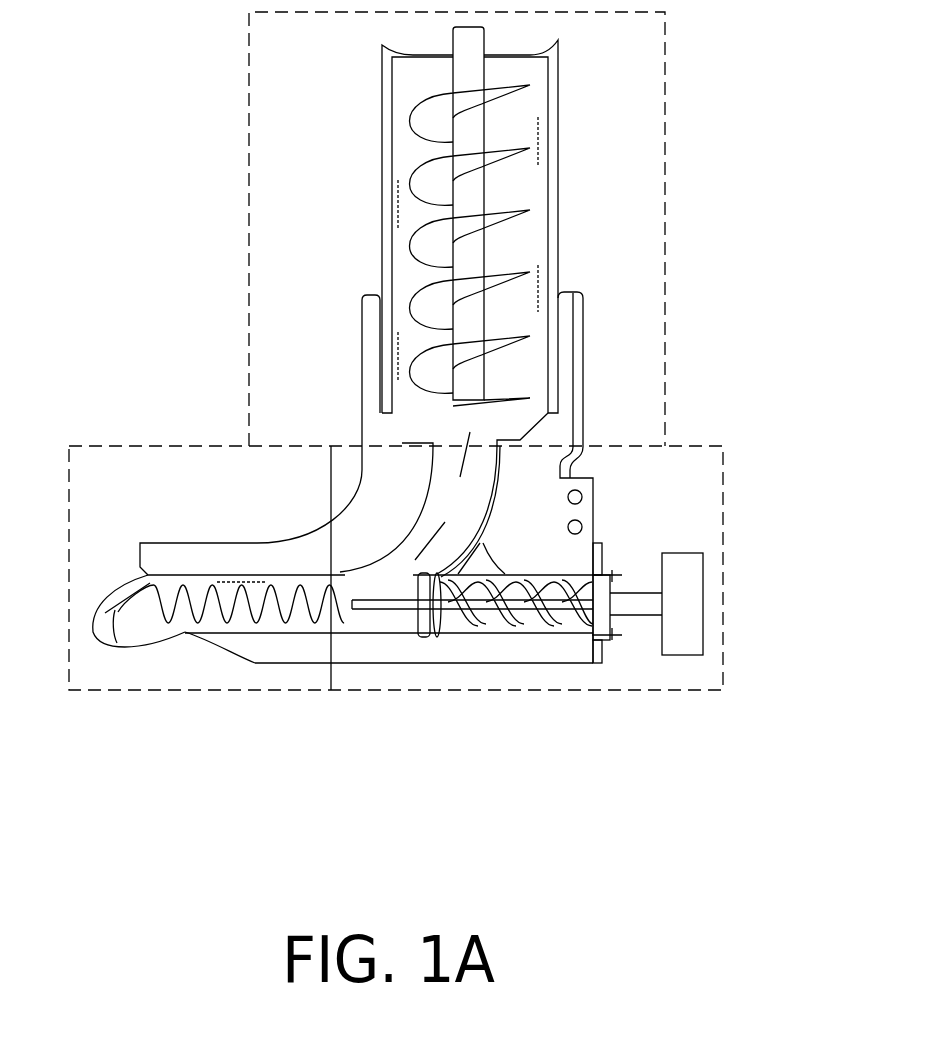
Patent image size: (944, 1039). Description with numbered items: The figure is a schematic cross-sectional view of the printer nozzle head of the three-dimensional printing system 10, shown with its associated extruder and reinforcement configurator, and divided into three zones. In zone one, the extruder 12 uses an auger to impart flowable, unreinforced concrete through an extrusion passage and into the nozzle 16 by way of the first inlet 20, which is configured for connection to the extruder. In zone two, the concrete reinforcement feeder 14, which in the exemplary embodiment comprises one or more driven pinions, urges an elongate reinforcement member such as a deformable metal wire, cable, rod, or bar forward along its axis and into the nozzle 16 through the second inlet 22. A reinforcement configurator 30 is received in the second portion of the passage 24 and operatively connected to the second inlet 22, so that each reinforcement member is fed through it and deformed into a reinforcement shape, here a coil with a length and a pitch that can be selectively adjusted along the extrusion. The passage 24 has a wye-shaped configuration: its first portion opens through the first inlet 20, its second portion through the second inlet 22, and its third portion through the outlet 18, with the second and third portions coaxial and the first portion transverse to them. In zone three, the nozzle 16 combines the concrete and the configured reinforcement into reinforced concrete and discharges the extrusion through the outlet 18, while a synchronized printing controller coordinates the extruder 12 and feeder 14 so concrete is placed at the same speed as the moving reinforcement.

The 3D printing system 10 is at (127, 180).
The extruder 12 is at (562, 135).
The concrete reinforcement feeder 14 is at (683, 657).
The nozzle 16 is at (432, 672).
The outlet 18 is at (188, 632).
The first inlet 20 is at (418, 425).
The second inlet 22 is at (620, 607).
The passage 24 is at (378, 578).
The reinforcement configurator 30 is at (505, 630).